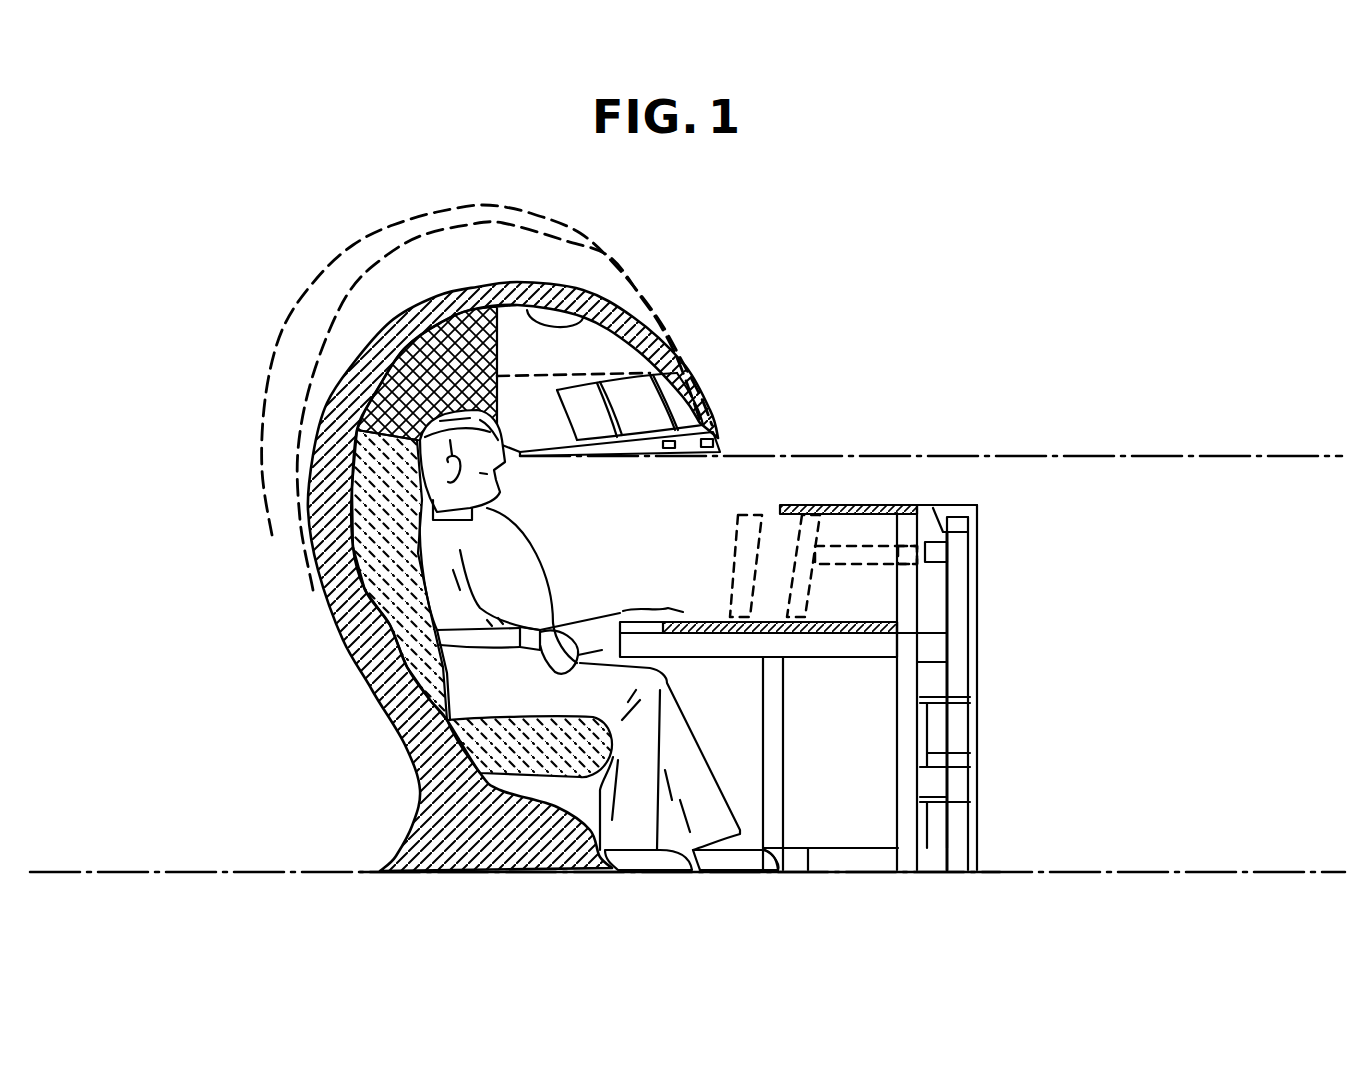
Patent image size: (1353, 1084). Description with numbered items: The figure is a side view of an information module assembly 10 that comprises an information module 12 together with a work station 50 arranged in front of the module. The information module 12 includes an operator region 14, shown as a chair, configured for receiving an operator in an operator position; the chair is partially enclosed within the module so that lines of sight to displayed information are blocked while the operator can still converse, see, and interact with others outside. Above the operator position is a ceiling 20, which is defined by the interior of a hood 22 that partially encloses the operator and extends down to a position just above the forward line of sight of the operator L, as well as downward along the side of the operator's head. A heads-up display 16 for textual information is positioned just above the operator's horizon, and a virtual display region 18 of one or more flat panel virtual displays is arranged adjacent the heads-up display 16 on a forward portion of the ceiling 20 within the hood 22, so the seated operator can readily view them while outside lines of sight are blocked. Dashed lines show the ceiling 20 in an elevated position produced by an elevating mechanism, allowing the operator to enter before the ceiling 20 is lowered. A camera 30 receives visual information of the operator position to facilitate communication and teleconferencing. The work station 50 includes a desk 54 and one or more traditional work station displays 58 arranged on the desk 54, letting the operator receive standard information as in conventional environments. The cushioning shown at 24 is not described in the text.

The information module assembly 10 is at (357, 711).
The information module 12 is at (408, 762).
The operator region 14 is at (437, 630).
The heads-up display (HUD) 16 is at (720, 447).
The virtual display region 18 is at (633, 403).
The ceiling 20 is at (603, 303).
The hood 22 is at (348, 380).
The seat cushion 24 is at (445, 495).
The camera 30 is at (714, 430).
The work station 50 is at (948, 494).
The desk 54 is at (898, 633).
The traditional work station displays 58 is at (787, 540).
The forward line of sight of the operator L is at (1163, 455).